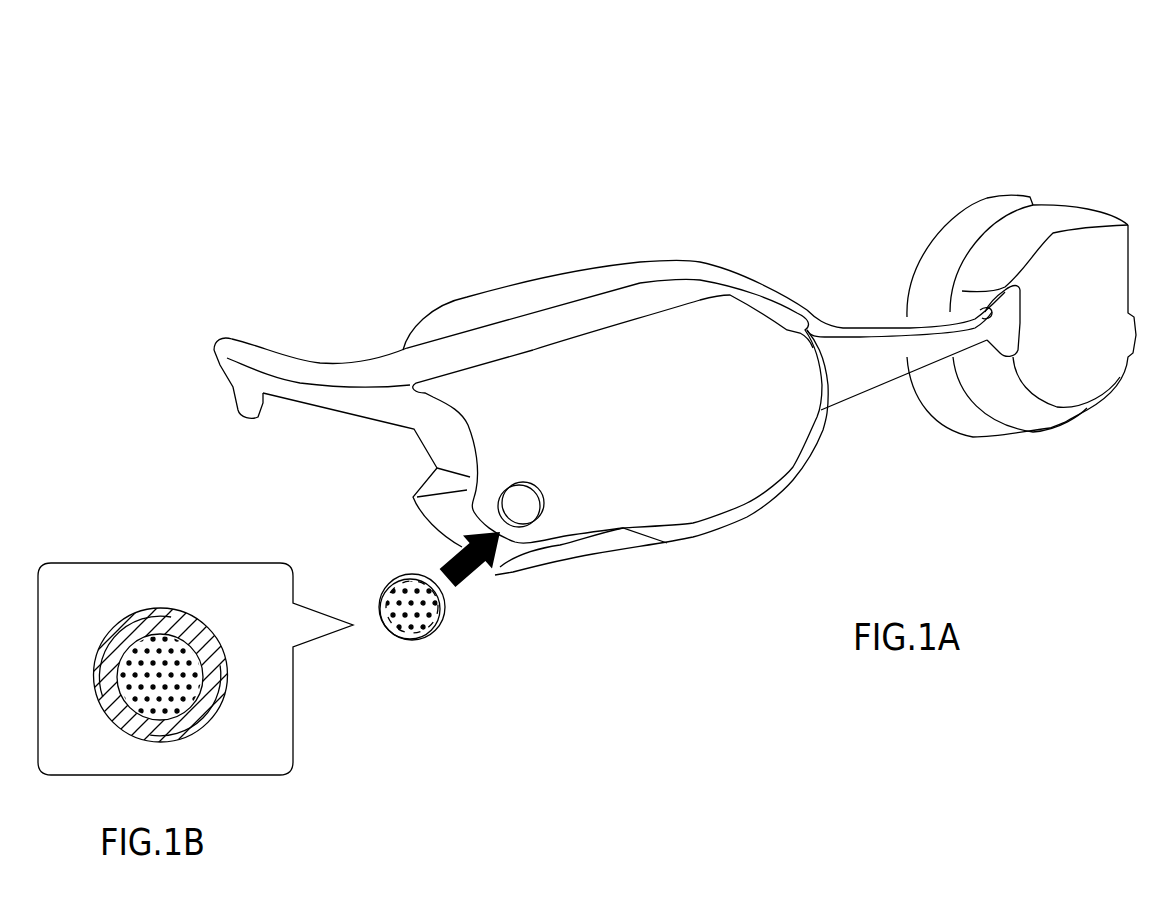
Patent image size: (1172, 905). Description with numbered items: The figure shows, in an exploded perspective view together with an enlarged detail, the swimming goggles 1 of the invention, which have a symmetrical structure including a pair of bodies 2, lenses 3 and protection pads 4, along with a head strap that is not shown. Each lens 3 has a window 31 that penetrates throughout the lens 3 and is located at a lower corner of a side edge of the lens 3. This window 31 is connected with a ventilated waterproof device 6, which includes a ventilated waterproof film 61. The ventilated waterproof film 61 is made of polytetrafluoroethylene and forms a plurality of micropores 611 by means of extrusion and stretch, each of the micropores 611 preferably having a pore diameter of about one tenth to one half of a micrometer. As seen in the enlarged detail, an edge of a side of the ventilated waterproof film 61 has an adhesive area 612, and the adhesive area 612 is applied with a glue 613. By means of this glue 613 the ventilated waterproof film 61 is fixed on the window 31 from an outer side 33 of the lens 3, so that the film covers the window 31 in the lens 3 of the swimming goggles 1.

In FIG. 1A, the swimming goggles 1 is at (675, 358).
In FIG. 1A, the body 2 is at (650, 298).
In FIG. 1A, the lens 3 is at (613, 364).
In FIG. 1A, the window 31 is at (535, 488).
In FIG. 1A, the outer side 33 is at (598, 513).
In FIG. 1A, the protection pad 4 is at (480, 310).
In FIG. 1A, the ventilated waterproof device 6 is at (536, 659).
In FIG. 1A, the ventilated waterproof film 61 is at (461, 680).
In FIG. 1B, the ventilated waterproof film 61 is at (231, 633).
In FIG. 1A, the micropores 611 is at (417, 633).
In FIG. 1B, the micropores 611 is at (158, 637).
In FIG. 1B, the adhesive area 612 is at (205, 646).
In FIG. 1B, the glue 613 is at (213, 670).